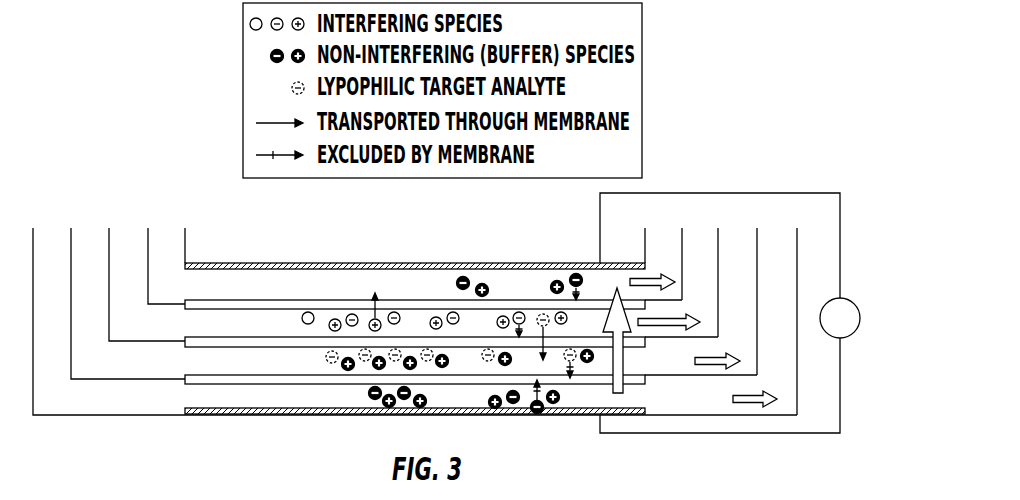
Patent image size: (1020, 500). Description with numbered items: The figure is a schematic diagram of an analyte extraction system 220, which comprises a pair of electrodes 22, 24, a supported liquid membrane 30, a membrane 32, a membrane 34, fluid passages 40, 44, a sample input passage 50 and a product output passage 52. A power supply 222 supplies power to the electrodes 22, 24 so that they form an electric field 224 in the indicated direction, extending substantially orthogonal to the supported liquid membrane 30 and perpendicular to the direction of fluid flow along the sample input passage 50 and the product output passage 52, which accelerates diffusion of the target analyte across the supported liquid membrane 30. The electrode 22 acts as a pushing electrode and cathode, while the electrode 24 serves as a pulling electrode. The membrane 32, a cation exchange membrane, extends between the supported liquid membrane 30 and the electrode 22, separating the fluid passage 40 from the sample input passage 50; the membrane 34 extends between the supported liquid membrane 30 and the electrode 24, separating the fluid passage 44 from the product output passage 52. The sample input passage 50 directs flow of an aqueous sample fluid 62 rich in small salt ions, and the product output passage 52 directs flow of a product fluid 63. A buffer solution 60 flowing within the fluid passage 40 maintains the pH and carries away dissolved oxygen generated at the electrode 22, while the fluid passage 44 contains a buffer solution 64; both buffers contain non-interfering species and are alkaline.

The extraction system 220 is at (155, 93).
The electrode 22 is at (500, 262).
The electrode 24 is at (516, 416).
The membrane 32 is at (188, 304).
The supported liquid membrane 30 is at (188, 342).
The membrane 34 is at (188, 380).
The fluid passage 40 is at (148, 250).
The sample input passage 50 is at (109, 250).
The product output passage 52 is at (71, 250).
The fluid passage 44 is at (33, 250).
The buffer solution 60 is at (650, 275).
The sample fluid 62 is at (689, 318).
The product fluid 63 is at (726, 355).
The buffer solution 64 is at (767, 391).
The power supply 222 is at (858, 298).
The electric field 224 is at (622, 361).